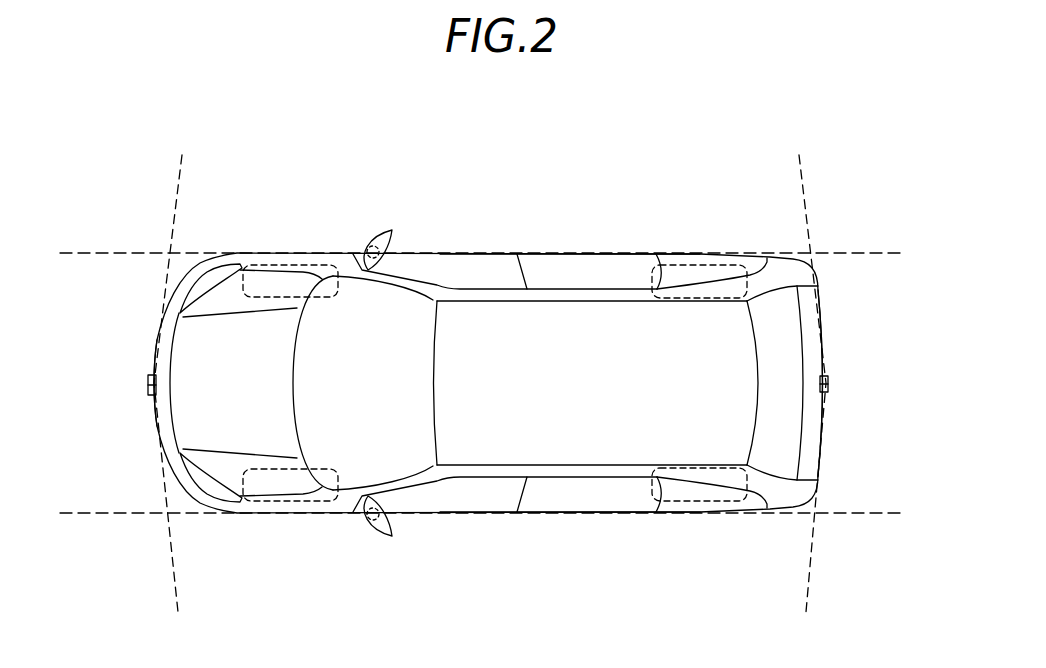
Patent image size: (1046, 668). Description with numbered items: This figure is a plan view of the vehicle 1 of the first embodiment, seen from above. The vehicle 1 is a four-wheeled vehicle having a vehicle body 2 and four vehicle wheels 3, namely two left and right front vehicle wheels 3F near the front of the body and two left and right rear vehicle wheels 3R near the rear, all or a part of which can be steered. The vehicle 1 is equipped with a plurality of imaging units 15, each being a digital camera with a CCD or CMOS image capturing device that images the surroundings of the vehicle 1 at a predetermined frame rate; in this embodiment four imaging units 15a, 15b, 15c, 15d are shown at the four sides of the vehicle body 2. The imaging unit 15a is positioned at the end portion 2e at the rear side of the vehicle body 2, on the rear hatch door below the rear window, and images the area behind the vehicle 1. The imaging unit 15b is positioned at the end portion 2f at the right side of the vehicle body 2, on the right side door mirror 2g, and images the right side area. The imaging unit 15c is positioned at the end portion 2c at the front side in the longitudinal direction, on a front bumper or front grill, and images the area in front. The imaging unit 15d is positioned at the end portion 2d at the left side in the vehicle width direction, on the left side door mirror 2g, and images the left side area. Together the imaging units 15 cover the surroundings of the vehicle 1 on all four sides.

The vehicle 1 is at (610, 163).
The vehicle body 2 is at (770, 250).
The end portion at the front side 2c is at (152, 400).
The end portion at the left side 2d is at (592, 514).
The end portion at the rear side 2e is at (826, 404).
The end portion at the right side 2f is at (603, 253).
The door mirror 2g is at (395, 232).
The vehicle wheels 3 is at (495, 385).
The front vehicle wheels 3F is at (290, 263).
The rear vehicle wheels 3R is at (697, 255).
The imaging unit 15 is at (501, 400).
The imaging unit 15a is at (828, 383).
The imaging unit 15b is at (374, 231).
The imaging unit 15c is at (147, 382).
The imaging unit 15d is at (375, 533).